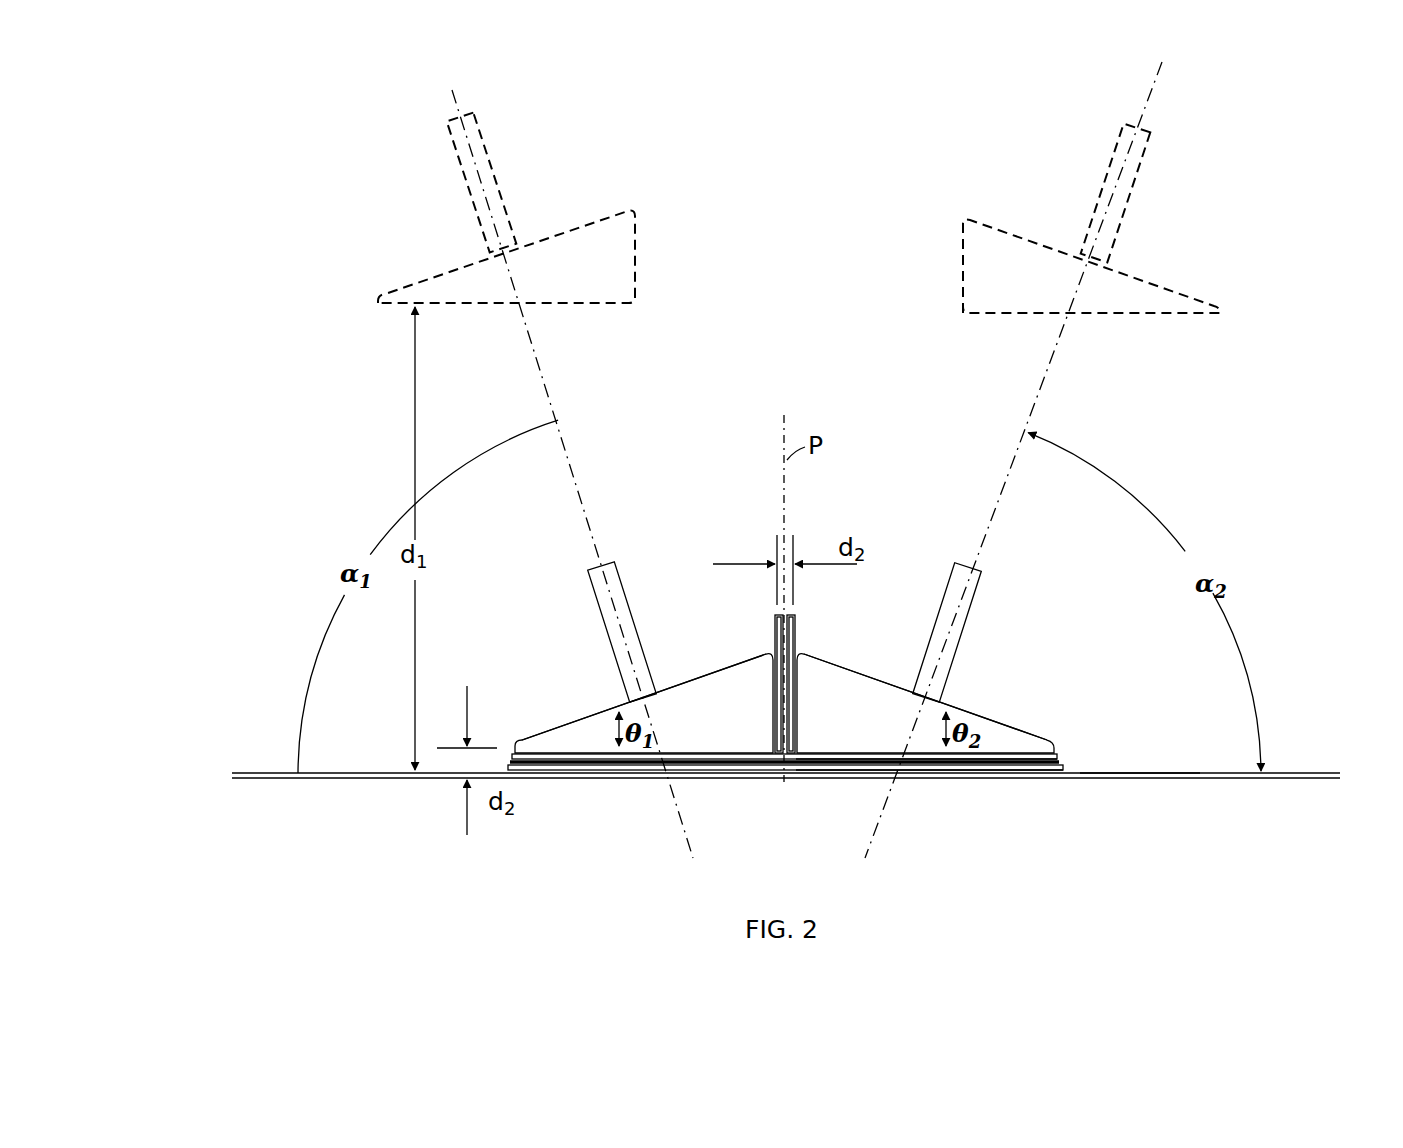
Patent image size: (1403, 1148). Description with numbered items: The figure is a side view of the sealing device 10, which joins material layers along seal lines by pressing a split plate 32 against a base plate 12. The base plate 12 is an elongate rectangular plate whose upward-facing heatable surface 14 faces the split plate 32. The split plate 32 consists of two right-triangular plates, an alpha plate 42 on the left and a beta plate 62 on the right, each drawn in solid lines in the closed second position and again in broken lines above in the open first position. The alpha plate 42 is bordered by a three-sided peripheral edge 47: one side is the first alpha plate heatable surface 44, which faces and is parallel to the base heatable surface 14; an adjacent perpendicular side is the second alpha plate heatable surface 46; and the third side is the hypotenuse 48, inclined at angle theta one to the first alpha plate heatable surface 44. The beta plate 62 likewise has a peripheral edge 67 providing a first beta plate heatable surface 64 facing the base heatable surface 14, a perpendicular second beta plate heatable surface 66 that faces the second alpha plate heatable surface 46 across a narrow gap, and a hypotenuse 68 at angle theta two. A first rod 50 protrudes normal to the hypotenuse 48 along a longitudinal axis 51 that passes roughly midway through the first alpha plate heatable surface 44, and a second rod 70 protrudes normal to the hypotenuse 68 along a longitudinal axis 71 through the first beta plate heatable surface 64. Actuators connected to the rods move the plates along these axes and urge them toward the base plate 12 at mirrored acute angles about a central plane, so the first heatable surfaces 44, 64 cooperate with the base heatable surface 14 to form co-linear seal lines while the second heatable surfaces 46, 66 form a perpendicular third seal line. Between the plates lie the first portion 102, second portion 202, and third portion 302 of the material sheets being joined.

The sealing device 10 is at (326, 384).
The base plate 12 is at (1130, 779).
The base heatable surface 14 is at (1118, 772).
The split plate 32 is at (1060, 675).
The alpha plate 42 is at (688, 738).
The first alpha plate heatable surface 44 is at (558, 754).
The second alpha plate heatable surface 46 is at (781, 735).
The peripheral edge 47 is at (644, 697).
The hypotenuse 48 is at (590, 712).
The first rod 50 is at (598, 602).
The longitudinal axis 51 is at (553, 399).
The beta plate 62 is at (920, 740).
The first beta plate heatable surface 64 is at (978, 759).
The second beta plate heatable surface 66 is at (795, 683).
The peripheral edge 67 is at (925, 697).
The hypotenuse 68 is at (975, 712).
The second rod 70 is at (942, 598).
The longitudinal axis 71 is at (1047, 383).
The first portion 102 is at (648, 760).
The second portion 202 is at (1040, 766).
The third portion 302 is at (875, 766).